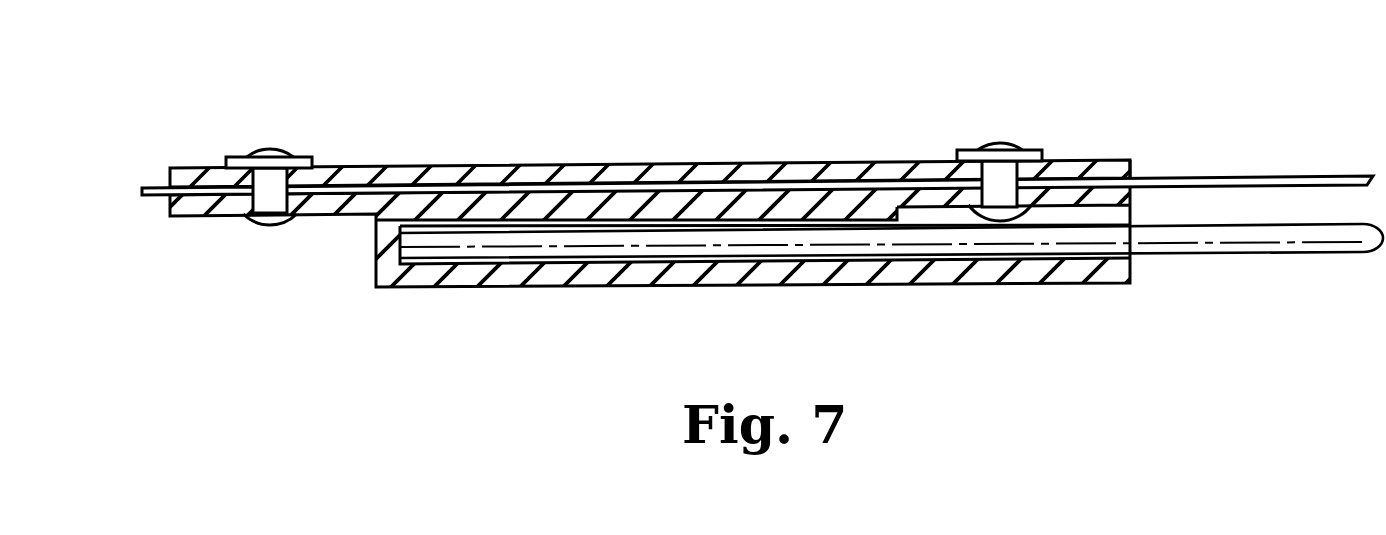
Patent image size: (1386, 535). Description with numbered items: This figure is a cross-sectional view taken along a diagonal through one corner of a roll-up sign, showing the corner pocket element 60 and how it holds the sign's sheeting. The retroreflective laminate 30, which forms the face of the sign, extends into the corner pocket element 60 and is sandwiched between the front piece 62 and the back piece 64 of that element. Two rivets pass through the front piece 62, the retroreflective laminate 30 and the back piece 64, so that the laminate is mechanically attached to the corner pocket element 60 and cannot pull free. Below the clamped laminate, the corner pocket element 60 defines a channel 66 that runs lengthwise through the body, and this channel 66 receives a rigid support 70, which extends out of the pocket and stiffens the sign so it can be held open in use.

The retroreflective laminate 30 is at (1200, 180).
The corner pocket element 60 is at (733, 128).
The front piece 62 is at (497, 165).
The back piece 64 is at (345, 218).
The channel 66 is at (572, 266).
The rigid support 70 is at (1219, 232).